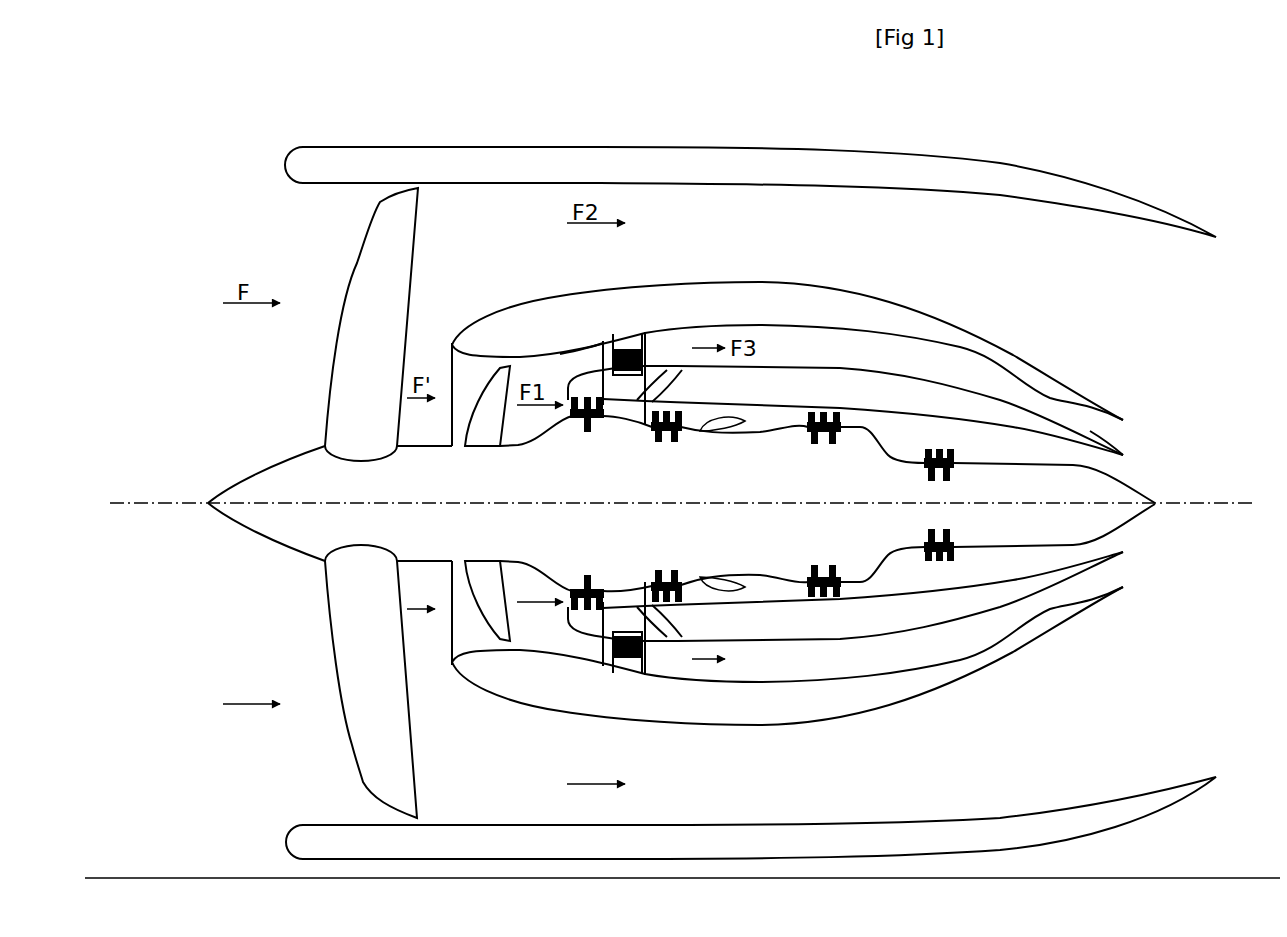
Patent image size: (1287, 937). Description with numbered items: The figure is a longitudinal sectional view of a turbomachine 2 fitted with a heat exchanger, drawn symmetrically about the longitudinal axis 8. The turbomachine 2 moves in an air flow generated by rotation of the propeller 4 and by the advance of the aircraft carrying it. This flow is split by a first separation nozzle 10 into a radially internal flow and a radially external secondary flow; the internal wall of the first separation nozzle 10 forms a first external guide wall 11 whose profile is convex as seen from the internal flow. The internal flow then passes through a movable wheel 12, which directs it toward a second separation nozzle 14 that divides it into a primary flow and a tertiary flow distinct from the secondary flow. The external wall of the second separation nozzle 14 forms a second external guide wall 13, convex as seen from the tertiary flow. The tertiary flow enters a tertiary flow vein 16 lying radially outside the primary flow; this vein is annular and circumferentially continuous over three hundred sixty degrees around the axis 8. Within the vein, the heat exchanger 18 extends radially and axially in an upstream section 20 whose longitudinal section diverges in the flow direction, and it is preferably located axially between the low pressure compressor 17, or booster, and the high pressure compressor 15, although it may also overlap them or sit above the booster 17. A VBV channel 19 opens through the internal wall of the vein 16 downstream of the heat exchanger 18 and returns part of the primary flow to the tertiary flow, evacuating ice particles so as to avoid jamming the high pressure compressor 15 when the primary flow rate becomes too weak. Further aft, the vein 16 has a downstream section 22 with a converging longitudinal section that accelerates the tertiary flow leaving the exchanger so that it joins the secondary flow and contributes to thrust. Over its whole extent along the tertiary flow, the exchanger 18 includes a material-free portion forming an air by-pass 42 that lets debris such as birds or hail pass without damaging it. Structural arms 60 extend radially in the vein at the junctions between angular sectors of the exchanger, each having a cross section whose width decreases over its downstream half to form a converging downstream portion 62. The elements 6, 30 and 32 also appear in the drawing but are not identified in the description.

The turbomachine 2 is at (258, 257).
The propeller 4 is at (380, 336).
The hub 6 is at (303, 493).
The longitudinal axis 8 is at (160, 503).
The first separation nozzle 10 is at (453, 336).
The first external guide wall 11 is at (455, 356).
The movable wheel 12 is at (497, 428).
The second external guide wall 13 is at (595, 362).
The second separation nozzle 14 is at (583, 387).
The high pressure compressor 15 is at (680, 433).
The tertiary flow vein 16 is at (859, 361).
The low pressure compressor 17 is at (582, 432).
The heat exchanger 18 is at (628, 350).
The VBV channel 19 is at (662, 389).
The upstream section 20 is at (600, 343).
The downstream section 22 is at (1083, 420).
The heat exchanger duct 30 is at (737, 318).
The inter-duct channel 32 is at (804, 399).
The air by-pass 42 is at (635, 347).
The structural arm 60 is at (622, 410).
The converging downstream portion 62 is at (657, 353).